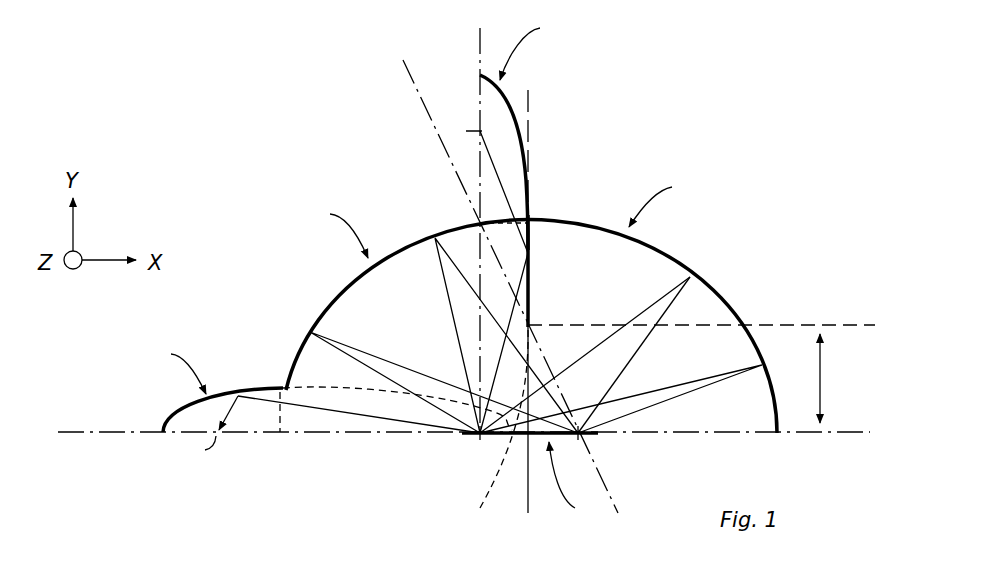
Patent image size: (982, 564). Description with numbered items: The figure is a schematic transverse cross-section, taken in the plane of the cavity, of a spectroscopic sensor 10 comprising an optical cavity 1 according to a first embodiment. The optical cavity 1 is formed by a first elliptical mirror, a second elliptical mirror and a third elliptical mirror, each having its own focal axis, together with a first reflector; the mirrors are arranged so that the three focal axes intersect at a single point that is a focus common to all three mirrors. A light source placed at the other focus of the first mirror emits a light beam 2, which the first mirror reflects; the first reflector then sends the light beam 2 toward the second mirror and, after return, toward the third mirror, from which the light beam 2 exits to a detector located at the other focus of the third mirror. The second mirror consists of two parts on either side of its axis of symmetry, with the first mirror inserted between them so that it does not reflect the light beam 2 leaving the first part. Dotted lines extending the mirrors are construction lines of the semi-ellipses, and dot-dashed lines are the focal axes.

The spectroscopic sensor 10 is at (355, 152).
The optical cavity 1 is at (694, 316).
The light beam 2 is at (636, 312).